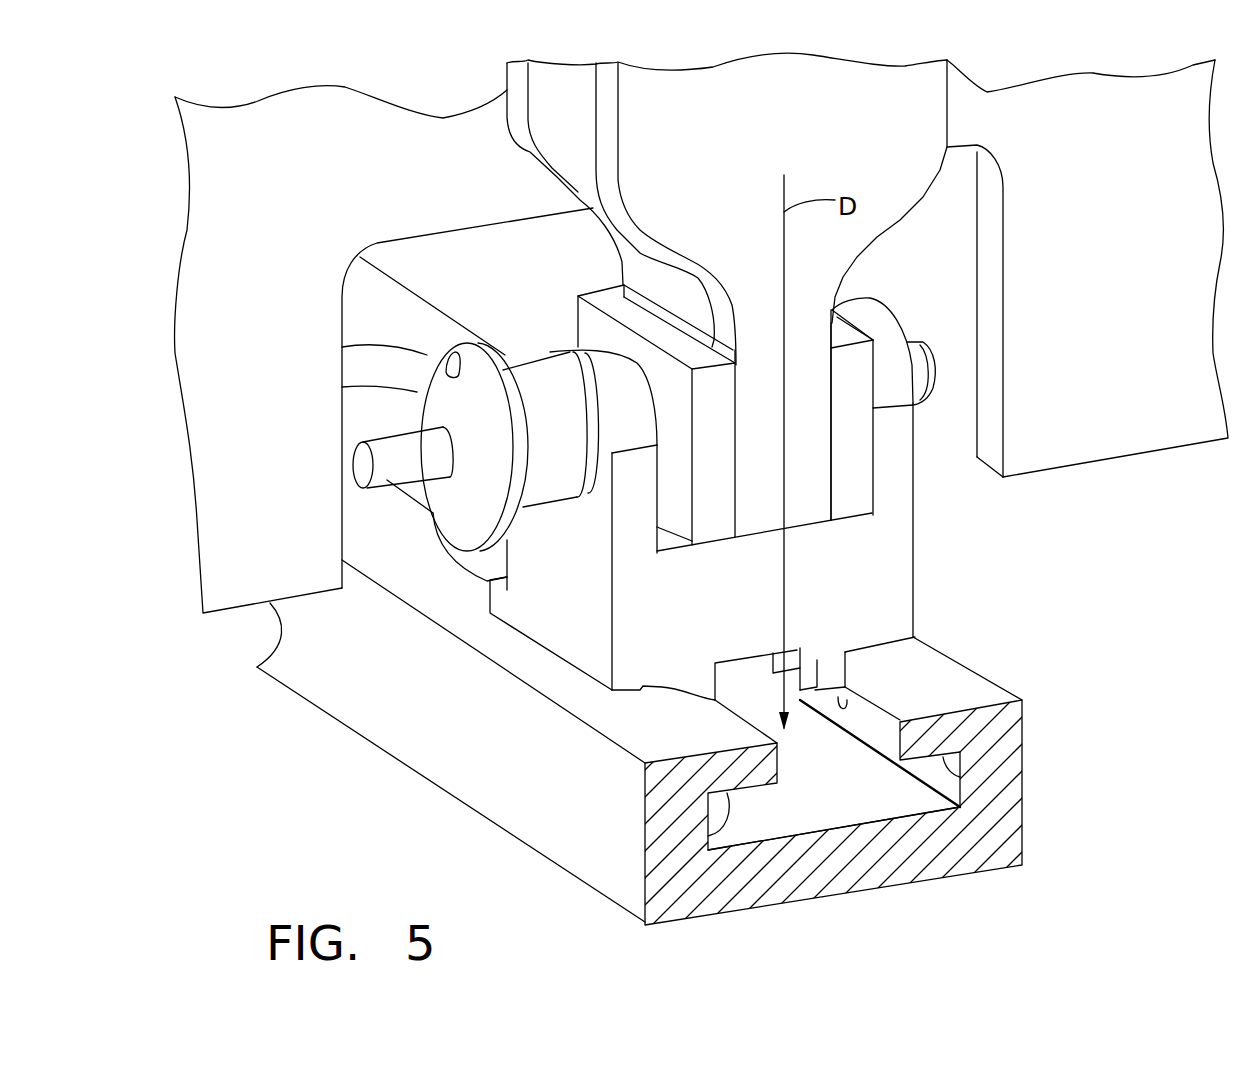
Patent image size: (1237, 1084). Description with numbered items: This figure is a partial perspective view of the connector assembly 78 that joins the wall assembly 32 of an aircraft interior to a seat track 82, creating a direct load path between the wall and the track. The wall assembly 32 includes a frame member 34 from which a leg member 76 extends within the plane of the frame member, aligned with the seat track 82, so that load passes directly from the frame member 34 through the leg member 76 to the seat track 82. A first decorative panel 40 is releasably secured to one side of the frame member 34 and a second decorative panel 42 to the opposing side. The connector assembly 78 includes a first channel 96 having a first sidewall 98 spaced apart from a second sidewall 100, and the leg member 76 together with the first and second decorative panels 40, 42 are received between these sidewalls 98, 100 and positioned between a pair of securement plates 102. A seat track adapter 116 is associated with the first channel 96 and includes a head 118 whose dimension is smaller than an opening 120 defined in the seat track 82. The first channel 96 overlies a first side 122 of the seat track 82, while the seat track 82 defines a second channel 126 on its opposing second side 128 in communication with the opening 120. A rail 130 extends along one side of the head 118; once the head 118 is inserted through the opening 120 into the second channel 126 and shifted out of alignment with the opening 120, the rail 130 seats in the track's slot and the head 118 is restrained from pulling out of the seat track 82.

The wall assembly 32 is at (823, 83).
The frame member 34 is at (570, 160).
The second decorative panel 42 is at (513, 137).
The first decorative panel 40 is at (810, 470).
The leg member 76 is at (672, 290).
The connector assembly 78 is at (967, 590).
The seat track 82 is at (1003, 722).
The first channel 96 is at (632, 547).
The first sidewall 98 is at (887, 460).
The second sidewall 100 is at (633, 413).
The securement plates 102 is at (707, 443).
The seat track adapter 116 is at (753, 675).
The head 118 is at (818, 690).
The opening 120 is at (845, 703).
The first side 122 is at (653, 732).
The second channel 126 is at (853, 790).
The second side 128 is at (712, 832).
The rail 130 is at (733, 663).